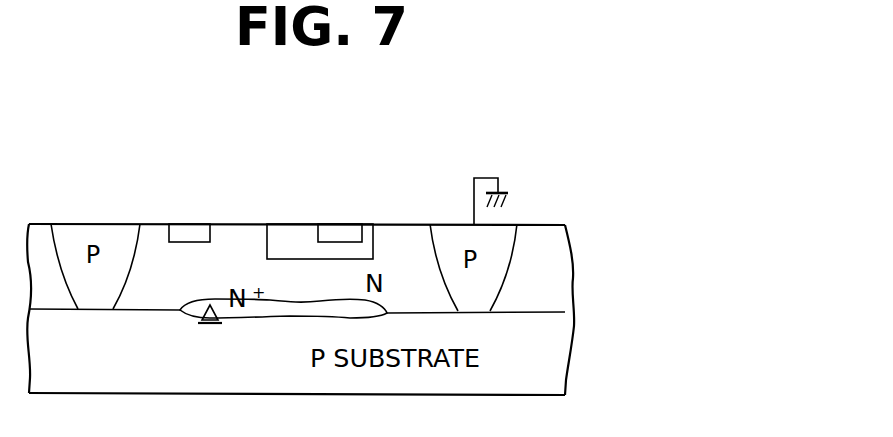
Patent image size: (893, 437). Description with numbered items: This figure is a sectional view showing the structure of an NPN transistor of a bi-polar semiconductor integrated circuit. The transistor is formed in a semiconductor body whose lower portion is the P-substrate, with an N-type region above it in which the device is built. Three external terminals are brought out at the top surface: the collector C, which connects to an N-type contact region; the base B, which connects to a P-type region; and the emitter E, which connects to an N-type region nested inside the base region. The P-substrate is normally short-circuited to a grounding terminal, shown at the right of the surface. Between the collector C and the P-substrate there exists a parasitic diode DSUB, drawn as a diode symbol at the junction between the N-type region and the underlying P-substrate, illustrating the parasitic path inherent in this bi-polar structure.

The collector C is at (190, 224).
The base B is at (290, 224).
The emitter E is at (340, 224).
The parasitic diode DSUB is at (210, 270).